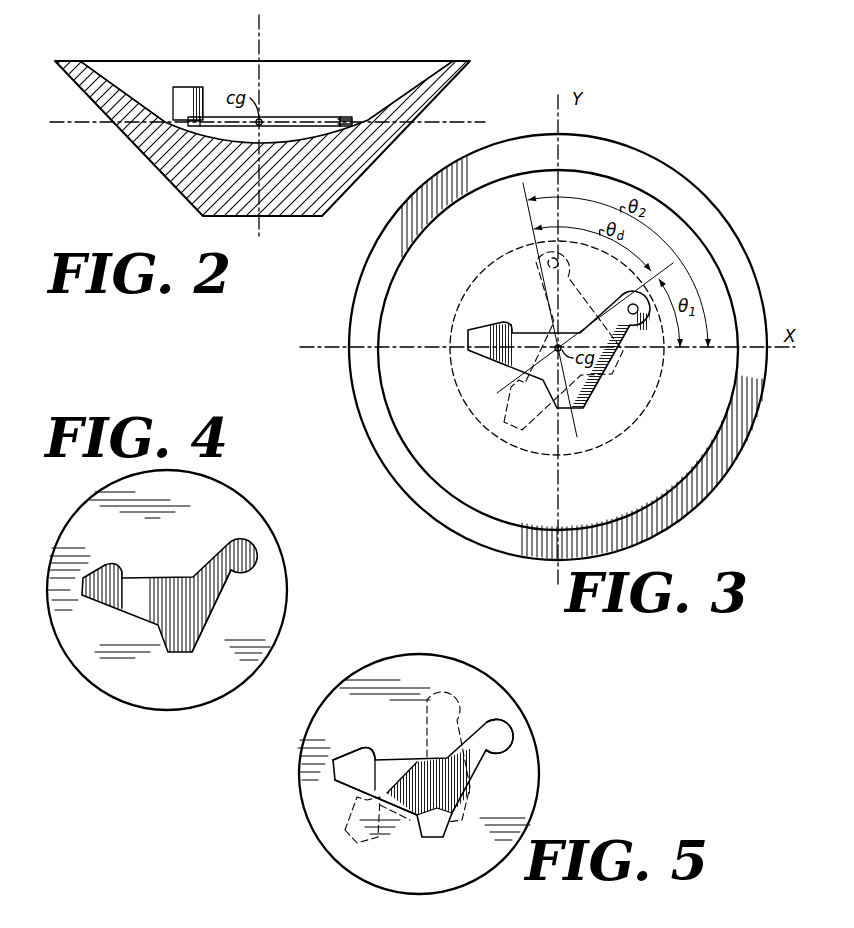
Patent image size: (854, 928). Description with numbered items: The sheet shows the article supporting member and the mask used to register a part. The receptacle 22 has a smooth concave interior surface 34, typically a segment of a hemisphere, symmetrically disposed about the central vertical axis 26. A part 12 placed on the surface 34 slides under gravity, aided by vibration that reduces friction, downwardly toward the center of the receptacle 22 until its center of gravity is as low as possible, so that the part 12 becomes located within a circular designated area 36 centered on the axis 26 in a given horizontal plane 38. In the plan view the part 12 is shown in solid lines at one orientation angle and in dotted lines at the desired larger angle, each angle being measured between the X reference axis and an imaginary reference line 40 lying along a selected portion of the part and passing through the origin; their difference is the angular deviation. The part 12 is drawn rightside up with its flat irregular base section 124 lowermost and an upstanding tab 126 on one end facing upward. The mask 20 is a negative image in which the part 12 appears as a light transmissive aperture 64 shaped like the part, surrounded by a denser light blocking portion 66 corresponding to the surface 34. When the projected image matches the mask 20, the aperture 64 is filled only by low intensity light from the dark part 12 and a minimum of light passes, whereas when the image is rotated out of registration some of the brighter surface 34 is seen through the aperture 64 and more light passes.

In FIG. 2, the part 12 is at (272, 117).
In FIG. 3, the part 12 is at (628, 300).
In FIG. 4, the part 12 is at (218, 566).
In FIG. 5, the part 12 is at (447, 790).
In FIG. 4, the mask 20 is at (238, 490).
In FIG. 5, the mask 20 is at (507, 692).
In FIG. 2, the receptacle 22 is at (455, 61).
In FIG. 3, the receptacle 22 is at (368, 334).
In FIG. 2, the central vertical axis 26 is at (262, 30).
In FIG. 2, the concave interior surface 34 is at (108, 61).
In FIG. 3, the concave interior surface 34 is at (613, 196).
In FIG. 5, the concave interior surface 34 is at (497, 738).
In FIG. 3, the designated area 36 is at (458, 383).
In FIG. 2, the horizontal plane 38 is at (462, 120).
In FIG. 3, the reference line 40 is at (673, 263).
In FIG. 4, the aperture 64 is at (217, 603).
In FIG. 5, the aperture 64 is at (359, 748).
In FIG. 4, the light blocking portion 66 is at (267, 583).
In FIG. 5, the light blocking portion 66 is at (411, 663).
In FIG. 2, the base section 124 is at (320, 117).
In FIG. 3, the base section 124 is at (650, 327).
In FIG. 2, the tab 126 is at (193, 87).
In FIG. 3, the tab 126 is at (482, 325).